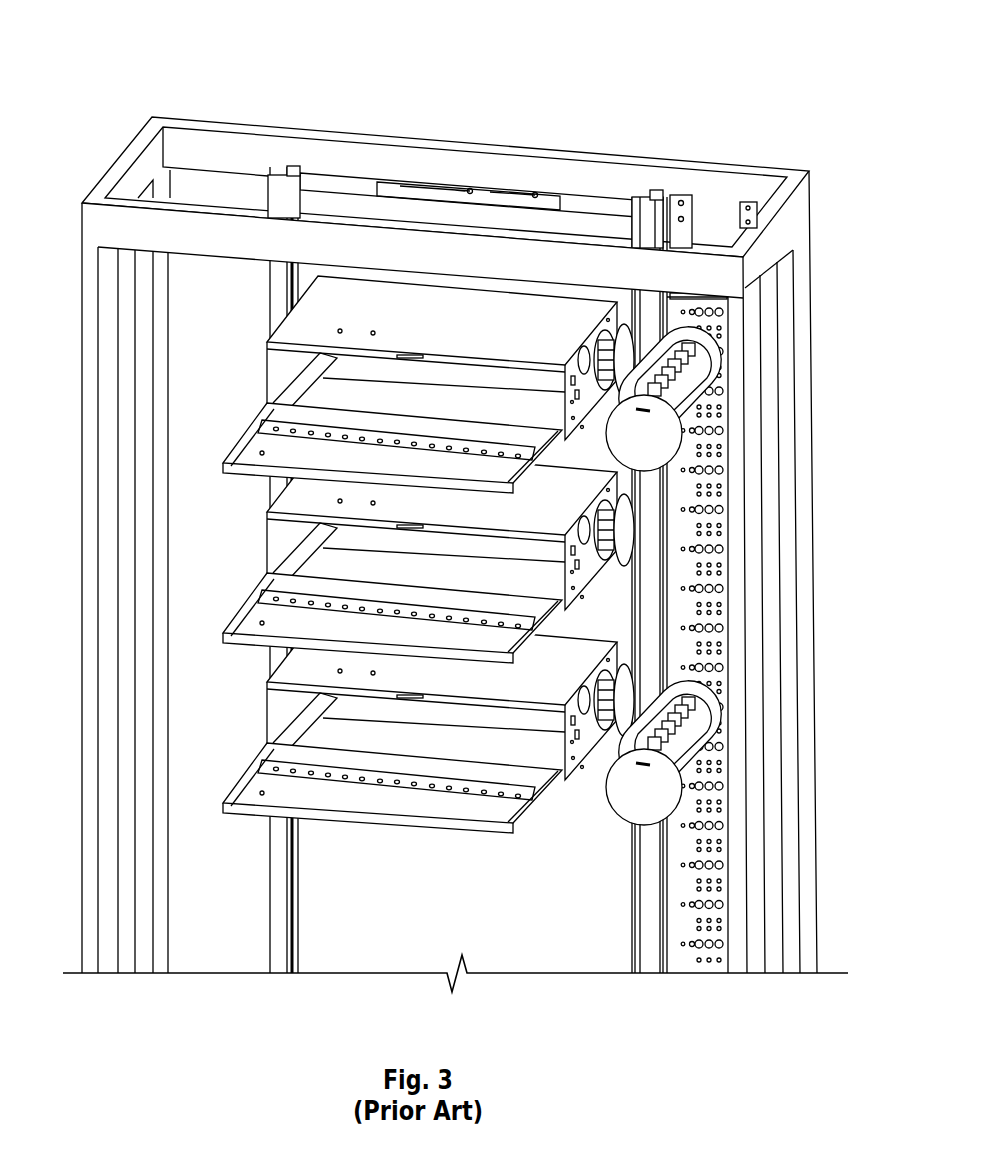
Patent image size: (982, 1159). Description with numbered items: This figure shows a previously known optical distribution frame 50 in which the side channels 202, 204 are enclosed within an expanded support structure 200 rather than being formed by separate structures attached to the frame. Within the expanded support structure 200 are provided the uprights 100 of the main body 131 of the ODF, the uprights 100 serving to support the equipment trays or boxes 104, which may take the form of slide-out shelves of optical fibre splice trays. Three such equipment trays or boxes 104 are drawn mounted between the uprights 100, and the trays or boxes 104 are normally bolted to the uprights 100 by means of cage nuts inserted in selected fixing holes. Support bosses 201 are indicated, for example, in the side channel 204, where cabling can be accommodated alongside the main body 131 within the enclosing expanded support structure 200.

The rack system 50 is at (446, 493).
The upright member 100 is at (277, 183).
The equipment tray or box 104 is at (281, 336).
The main body 131 is at (503, 125).
The expanded support structure 200 is at (87, 287).
The support boss 201 is at (608, 810).
The side channel 202 is at (234, 202).
The side channel 204 is at (707, 240).